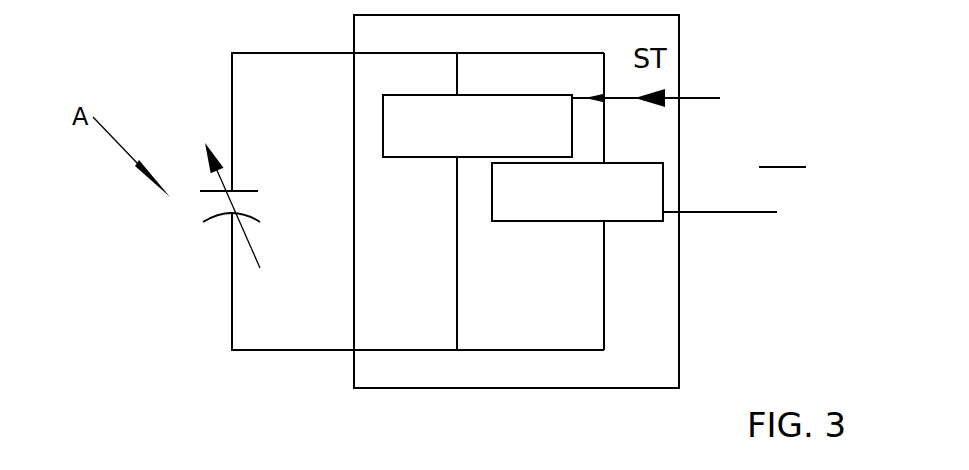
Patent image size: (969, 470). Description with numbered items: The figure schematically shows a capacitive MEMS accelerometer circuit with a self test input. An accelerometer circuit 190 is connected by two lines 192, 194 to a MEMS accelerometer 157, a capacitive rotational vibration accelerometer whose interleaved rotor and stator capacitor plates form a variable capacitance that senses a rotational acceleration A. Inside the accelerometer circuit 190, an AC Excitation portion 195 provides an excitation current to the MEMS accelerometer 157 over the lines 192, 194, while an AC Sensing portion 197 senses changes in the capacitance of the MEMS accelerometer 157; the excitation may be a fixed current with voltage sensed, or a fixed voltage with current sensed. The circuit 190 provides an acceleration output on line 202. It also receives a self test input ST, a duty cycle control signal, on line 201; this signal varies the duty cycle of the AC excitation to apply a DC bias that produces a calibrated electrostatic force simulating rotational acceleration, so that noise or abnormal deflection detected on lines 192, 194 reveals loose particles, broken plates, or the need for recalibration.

The MEMS accelerometer 157 is at (220, 221).
The accelerometer circuit 190 is at (475, 389).
The line 192 is at (277, 53).
The line 194 is at (276, 354).
The AC Excitation portion 195 is at (413, 158).
The AC Sensing portion 197 is at (545, 222).
The line 201 is at (695, 95).
The line 202 is at (708, 212).